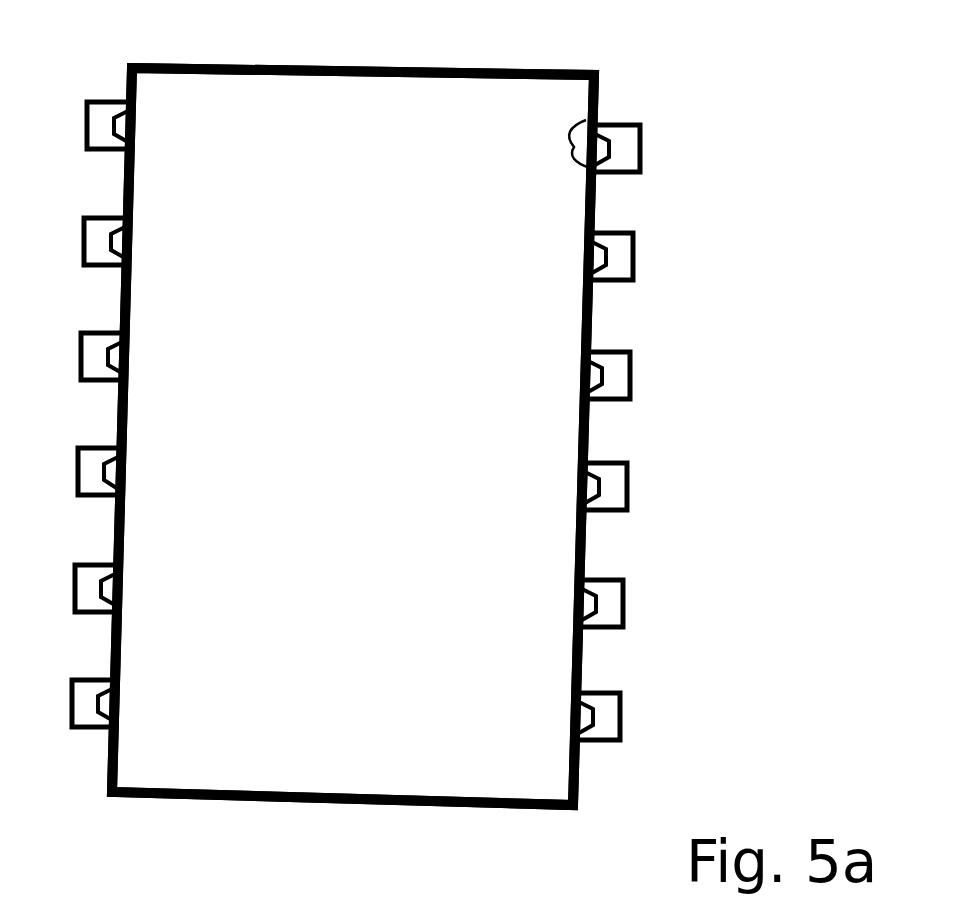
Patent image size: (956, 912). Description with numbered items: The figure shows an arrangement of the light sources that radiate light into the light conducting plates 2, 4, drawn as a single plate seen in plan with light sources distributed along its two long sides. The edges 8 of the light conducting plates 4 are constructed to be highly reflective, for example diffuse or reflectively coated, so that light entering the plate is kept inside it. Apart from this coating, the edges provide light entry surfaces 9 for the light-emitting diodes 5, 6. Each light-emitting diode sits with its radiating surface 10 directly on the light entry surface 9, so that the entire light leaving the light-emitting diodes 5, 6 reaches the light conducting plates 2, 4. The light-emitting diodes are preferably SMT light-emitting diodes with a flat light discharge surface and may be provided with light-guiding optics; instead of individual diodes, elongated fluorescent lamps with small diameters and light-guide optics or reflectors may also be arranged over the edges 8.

The light conducting plate 2 is at (353, 402).
The light conducting plate 4 is at (422, 125).
The light-emitting diode 5 is at (617, 262).
The light-emitting diode 6 is at (627, 140).
The edge 8 is at (593, 325).
The light entry surface 9 is at (574, 143).
The radiating surface 10 is at (600, 252).